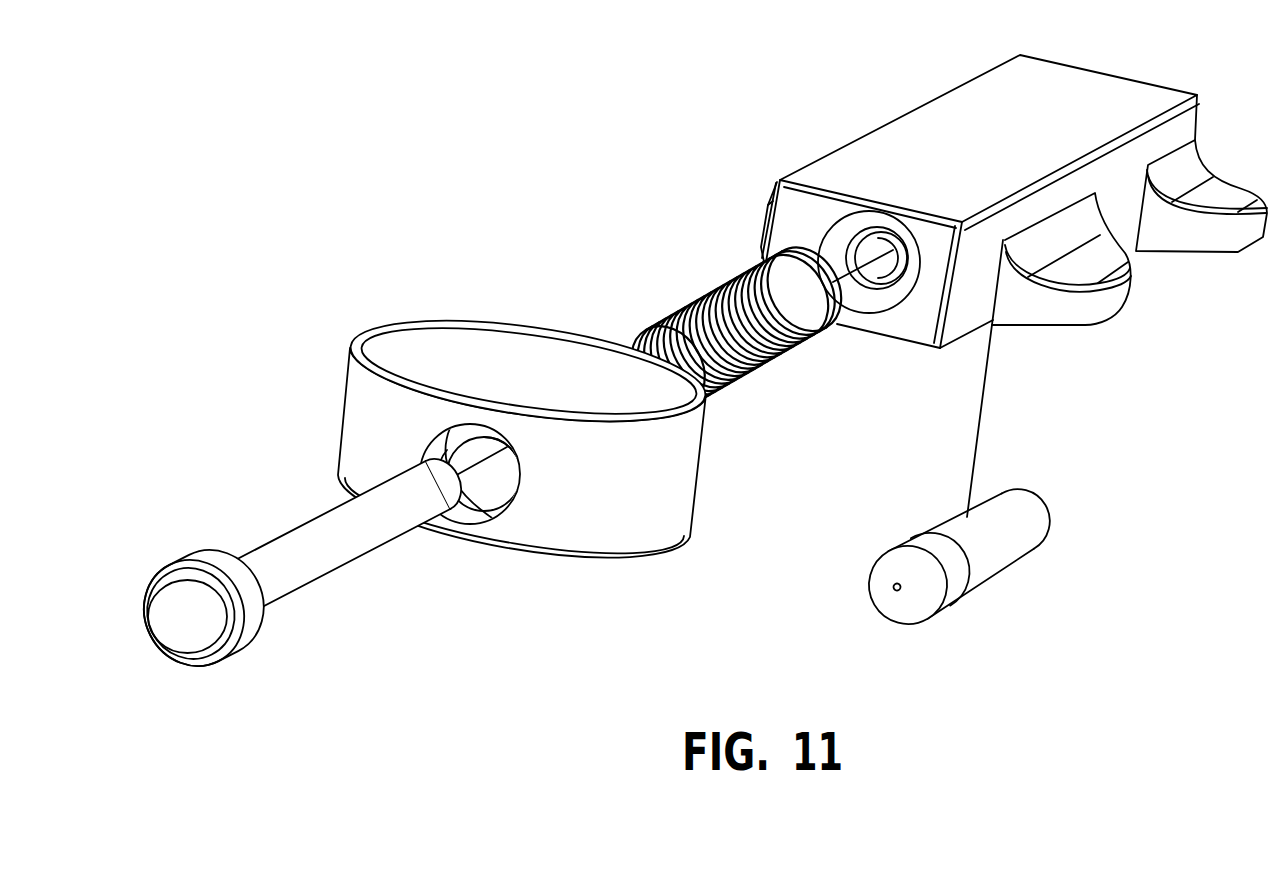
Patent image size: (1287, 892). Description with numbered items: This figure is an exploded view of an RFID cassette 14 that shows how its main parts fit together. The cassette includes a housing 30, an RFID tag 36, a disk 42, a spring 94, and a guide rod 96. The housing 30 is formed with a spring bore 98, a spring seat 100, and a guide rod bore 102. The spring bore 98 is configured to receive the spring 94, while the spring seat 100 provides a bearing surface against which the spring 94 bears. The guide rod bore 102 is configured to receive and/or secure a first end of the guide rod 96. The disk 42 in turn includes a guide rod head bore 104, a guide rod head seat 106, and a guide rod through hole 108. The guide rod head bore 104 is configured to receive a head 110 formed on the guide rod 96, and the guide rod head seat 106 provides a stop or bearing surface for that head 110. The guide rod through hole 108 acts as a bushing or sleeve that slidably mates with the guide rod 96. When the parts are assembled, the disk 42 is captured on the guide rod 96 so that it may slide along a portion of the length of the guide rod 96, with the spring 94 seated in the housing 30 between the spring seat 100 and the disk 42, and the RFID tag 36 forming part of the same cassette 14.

The RFID cassette 14 is at (619, 173).
The housing 30 is at (892, 138).
The RFID tag 36 is at (967, 593).
The disk 42 is at (460, 333).
The spring 94 is at (707, 303).
The guide rod 96 is at (323, 558).
The spring bore 98 is at (816, 364).
The spring seat 100 is at (760, 227).
The guide rod bore 102 is at (885, 279).
The guide rod head bore 104 is at (466, 517).
The guide rod head seat 106 is at (463, 440).
The guide rod through hole 108 is at (496, 473).
The head 110 is at (195, 645).